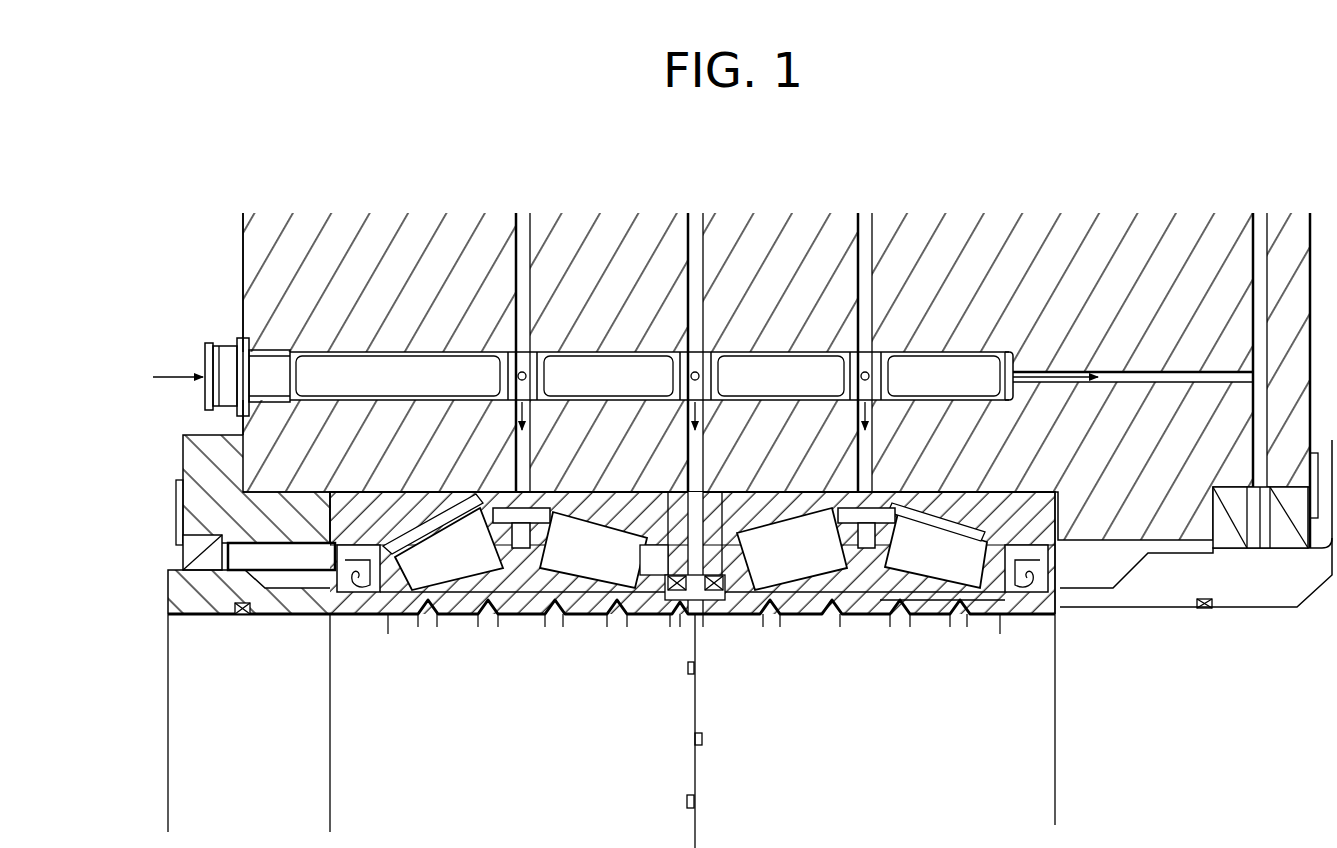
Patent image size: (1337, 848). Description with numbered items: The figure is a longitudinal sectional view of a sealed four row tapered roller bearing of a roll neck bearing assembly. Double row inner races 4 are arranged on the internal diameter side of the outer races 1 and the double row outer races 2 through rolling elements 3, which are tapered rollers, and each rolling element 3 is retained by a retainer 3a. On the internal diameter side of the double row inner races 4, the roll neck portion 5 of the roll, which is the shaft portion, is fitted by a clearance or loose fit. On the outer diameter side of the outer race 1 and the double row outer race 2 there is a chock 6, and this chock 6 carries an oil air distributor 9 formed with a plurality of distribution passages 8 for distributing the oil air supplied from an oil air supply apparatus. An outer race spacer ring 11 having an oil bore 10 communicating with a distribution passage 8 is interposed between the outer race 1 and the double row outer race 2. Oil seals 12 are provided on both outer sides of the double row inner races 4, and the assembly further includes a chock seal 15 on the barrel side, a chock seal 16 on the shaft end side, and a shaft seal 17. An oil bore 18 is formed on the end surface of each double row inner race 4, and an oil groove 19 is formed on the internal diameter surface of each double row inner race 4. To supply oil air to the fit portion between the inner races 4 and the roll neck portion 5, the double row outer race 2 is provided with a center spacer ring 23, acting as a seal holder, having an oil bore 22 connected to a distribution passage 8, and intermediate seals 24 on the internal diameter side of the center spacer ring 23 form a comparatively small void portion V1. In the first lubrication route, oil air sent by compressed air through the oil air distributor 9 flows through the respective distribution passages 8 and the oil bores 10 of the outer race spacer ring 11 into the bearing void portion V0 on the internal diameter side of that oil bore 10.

The outer race 1 is at (404, 500).
The double row outer race 2 is at (598, 500).
The rolling element 3 is at (590, 568).
The retainer 3a is at (437, 552).
The double row inner race 4 is at (507, 590).
The roll neck portion 5 is at (923, 623).
The chock 6 is at (250, 250).
The distribution passage 8 is at (703, 424).
The oil air distributor 9 is at (388, 280).
The oil bore 10 is at (858, 488).
The outer race spacer ring 11 is at (900, 488).
The oil seal 12 is at (345, 582).
The chock seal 15 is at (190, 552).
The chock seal 16 is at (1283, 540).
The shaft seal 17 is at (239, 618).
The oil bore 18 is at (688, 625).
The oil groove 19 is at (552, 622).
The oil bore 22 is at (688, 487).
The center spacer ring 23 is at (748, 492).
The intermediate seal 24 is at (717, 615).
The void portion V1 is at (655, 620).
The bearing void portion V0 is at (885, 605).